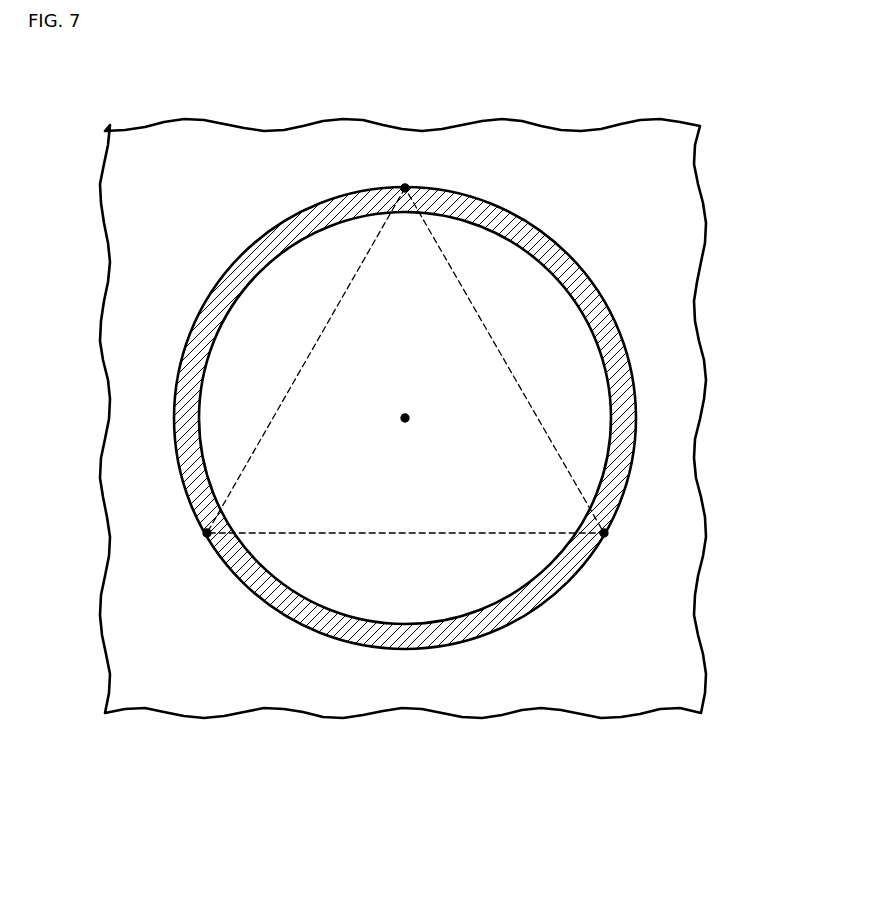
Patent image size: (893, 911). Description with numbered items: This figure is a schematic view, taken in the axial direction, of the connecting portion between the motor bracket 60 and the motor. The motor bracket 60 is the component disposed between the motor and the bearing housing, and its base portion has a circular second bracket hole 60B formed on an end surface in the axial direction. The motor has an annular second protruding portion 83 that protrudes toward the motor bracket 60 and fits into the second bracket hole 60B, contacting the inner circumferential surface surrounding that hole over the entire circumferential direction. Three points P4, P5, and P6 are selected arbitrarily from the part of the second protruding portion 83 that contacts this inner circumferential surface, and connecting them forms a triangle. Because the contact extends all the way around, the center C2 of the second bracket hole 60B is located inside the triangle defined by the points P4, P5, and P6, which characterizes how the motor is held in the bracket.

The motor bracket 60 is at (665, 467).
The second bracket hole 60B is at (340, 377).
The second protruding portion 83 is at (627, 410).
The point P4 is at (604, 533).
The point P5 is at (405, 188).
The point P6 is at (207, 533).
The center of the second bracket hole C2 is at (405, 418).